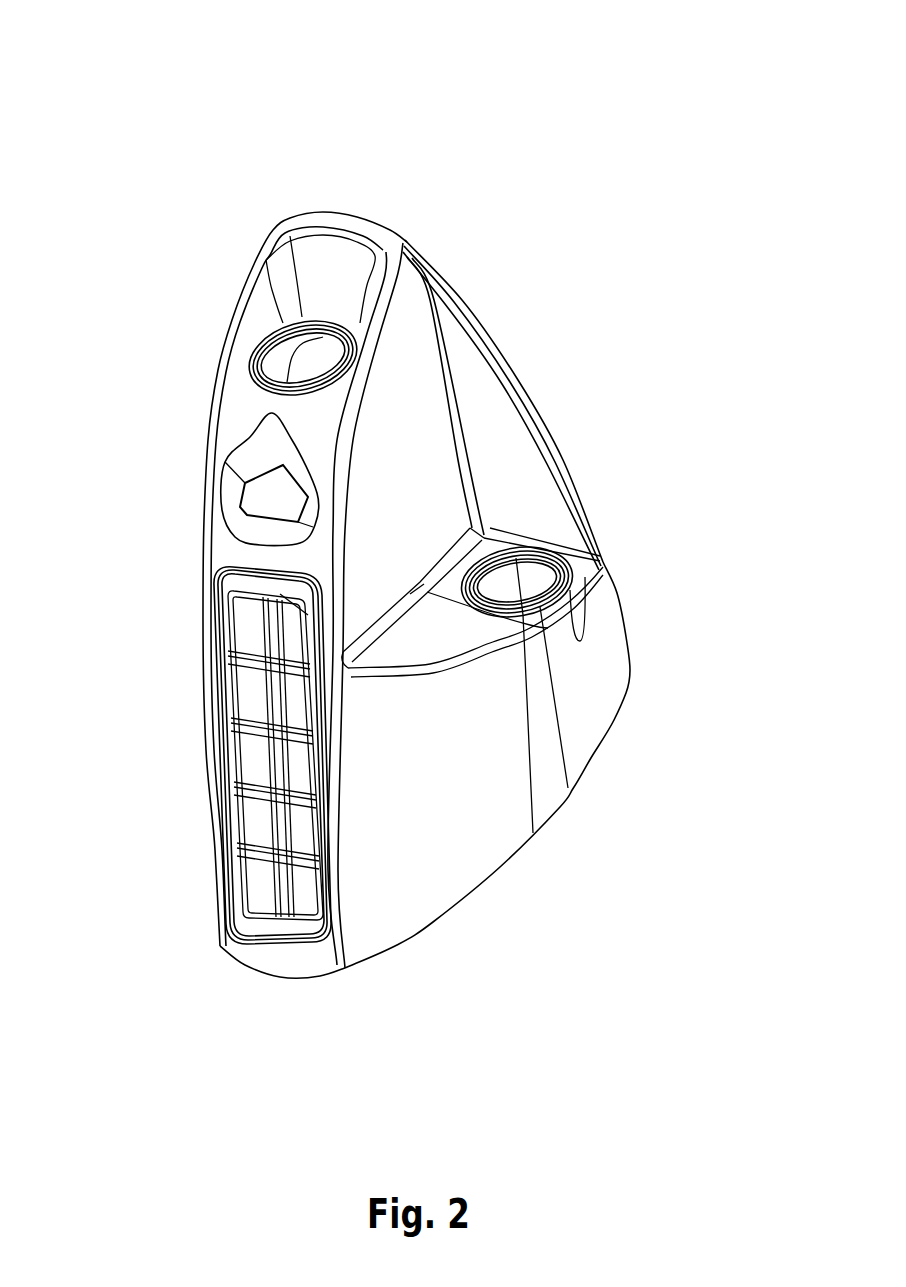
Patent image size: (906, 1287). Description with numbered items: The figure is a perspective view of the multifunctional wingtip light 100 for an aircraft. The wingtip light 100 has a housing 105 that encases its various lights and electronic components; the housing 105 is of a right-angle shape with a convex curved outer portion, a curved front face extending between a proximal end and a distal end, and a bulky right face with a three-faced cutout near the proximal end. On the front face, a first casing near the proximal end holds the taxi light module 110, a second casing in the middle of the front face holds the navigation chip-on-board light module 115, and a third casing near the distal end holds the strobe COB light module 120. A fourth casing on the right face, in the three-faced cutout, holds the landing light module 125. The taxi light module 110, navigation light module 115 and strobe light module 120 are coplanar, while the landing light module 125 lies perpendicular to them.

The wingtip light 100 is at (512, 123).
The housing 105 is at (490, 872).
The taxi light module 110 is at (278, 338).
The navigation chip-on-board (COB) light module 115 is at (253, 493).
The strobe COB light module 120 is at (240, 900).
The landing light module 125 is at (545, 570).